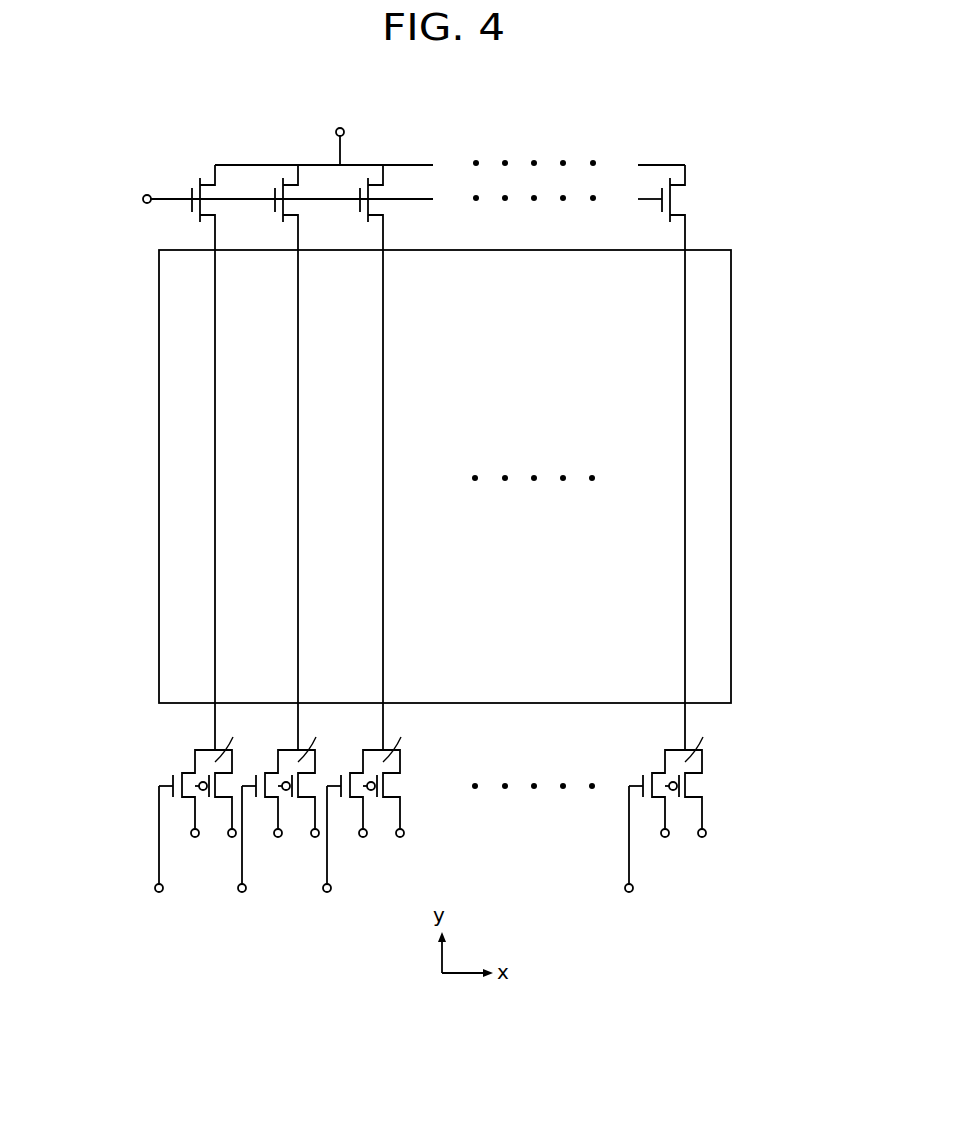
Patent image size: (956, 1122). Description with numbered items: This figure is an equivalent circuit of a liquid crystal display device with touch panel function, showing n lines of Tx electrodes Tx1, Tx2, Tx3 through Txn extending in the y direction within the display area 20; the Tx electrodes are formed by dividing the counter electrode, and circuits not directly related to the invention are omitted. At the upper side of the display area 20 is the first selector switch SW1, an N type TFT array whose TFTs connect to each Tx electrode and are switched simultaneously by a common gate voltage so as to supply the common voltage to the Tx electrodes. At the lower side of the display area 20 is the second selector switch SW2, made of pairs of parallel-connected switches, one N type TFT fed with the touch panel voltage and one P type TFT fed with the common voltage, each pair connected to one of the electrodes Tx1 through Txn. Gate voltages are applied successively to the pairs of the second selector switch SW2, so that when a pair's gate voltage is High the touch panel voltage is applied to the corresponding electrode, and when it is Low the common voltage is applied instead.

The display area 20 is at (718, 434).
The first selector switch SW1 is at (382, 174).
The second selector switch SW2 is at (418, 816).
The Tx electrode Tx1 is at (215, 365).
The Tx electrode Tx2 is at (298, 407).
The Tx electrode Tx3 is at (382, 452).
The Tx electrode Txn is at (685, 383).